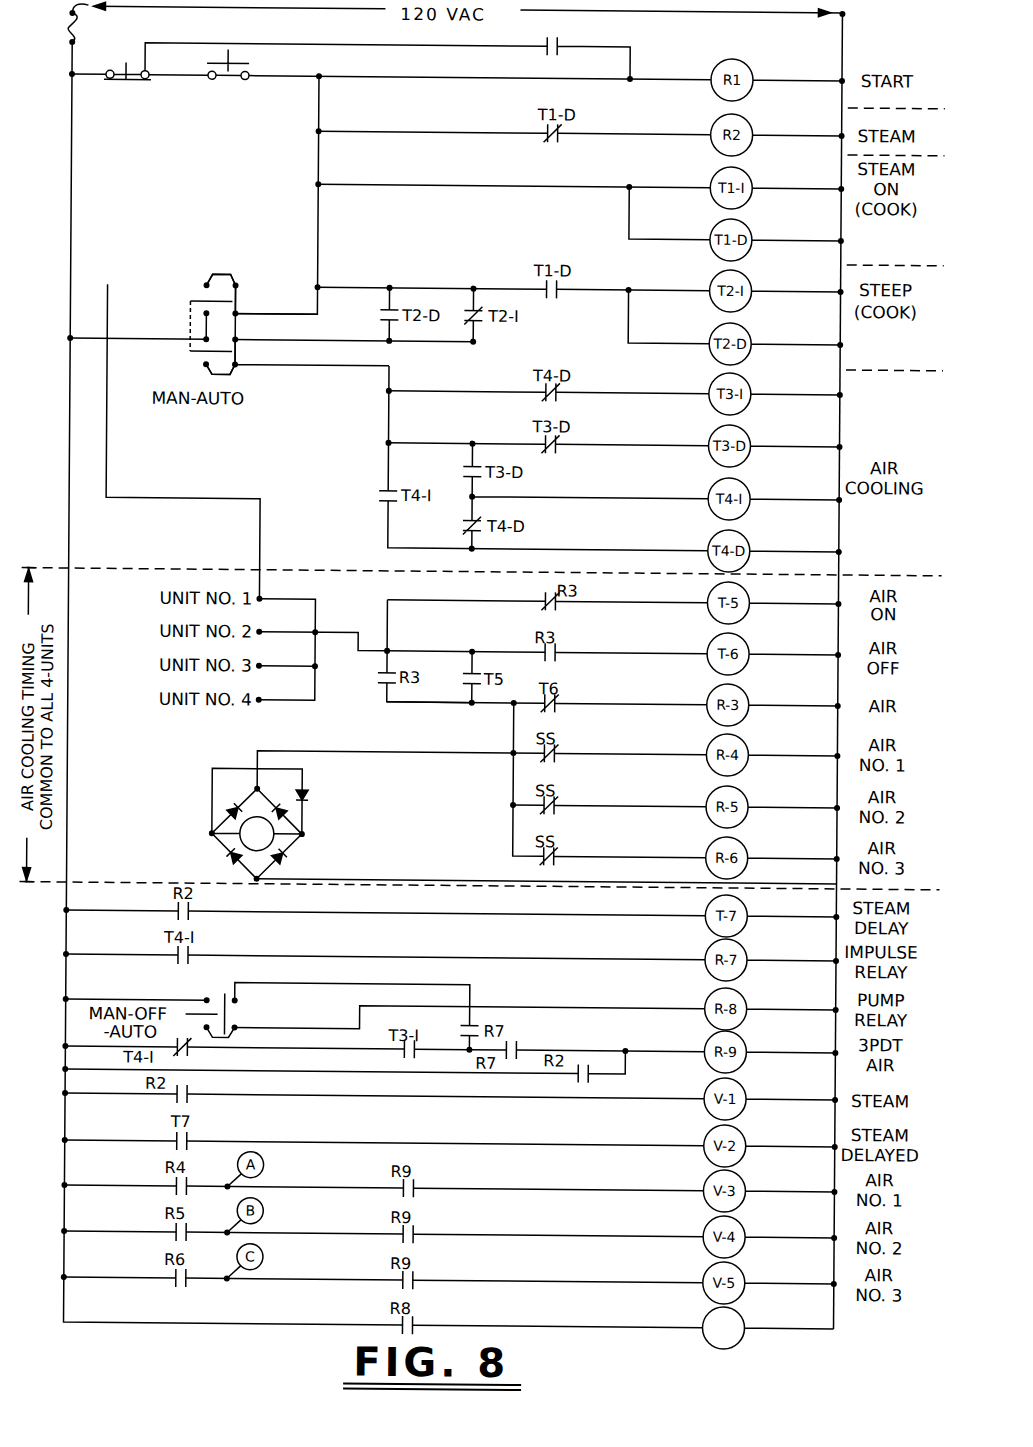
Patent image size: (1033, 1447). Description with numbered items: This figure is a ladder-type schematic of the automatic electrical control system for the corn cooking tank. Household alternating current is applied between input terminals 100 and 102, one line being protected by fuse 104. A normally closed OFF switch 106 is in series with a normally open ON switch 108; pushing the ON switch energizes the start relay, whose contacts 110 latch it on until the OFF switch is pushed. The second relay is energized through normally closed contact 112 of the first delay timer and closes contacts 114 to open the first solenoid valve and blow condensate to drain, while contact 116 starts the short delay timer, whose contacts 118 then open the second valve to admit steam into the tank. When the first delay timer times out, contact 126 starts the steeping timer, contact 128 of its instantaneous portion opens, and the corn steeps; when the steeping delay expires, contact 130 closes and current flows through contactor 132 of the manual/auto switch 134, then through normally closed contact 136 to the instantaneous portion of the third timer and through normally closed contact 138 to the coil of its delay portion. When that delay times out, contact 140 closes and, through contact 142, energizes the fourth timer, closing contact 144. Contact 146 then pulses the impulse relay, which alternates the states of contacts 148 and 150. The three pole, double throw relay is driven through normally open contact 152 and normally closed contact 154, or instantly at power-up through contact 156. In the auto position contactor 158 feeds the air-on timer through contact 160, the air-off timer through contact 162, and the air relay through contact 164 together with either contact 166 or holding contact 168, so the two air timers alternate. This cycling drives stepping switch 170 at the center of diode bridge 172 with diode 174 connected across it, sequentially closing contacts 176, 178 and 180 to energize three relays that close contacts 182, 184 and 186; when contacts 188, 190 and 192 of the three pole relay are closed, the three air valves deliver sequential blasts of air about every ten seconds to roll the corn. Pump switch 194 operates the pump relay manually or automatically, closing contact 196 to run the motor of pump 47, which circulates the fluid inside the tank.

The input terminal 100 is at (58, 18).
The input terminal 102 is at (847, 9).
The fuse 104 is at (86, 25).
The OFF switch 106 is at (127, 82).
The ON switch 108 is at (228, 76).
The R1 contacts 110 is at (559, 46).
The contact of delayed timer T1-D 112 is at (560, 135).
The R2 contacts 114 is at (195, 1087).
The contact of relay R2 116 is at (195, 915).
The contacts of delay timer T7 118 is at (184, 1138).
The contact of timer T1-D 126 is at (558, 290).
The contact of timer T2-I 128 is at (479, 320).
The contact of timer T2-D 130 is at (381, 312).
The contactor of manual/auto switch 132 is at (238, 347).
The manual/auto switch 134 is at (221, 268).
The contact of timer T4-D 136 is at (558, 393).
The contact of timer T3-D 138 is at (558, 445).
The contact of timer T3-D 140 is at (466, 466).
The contact of timer T4-D 142 is at (466, 522).
The contact of timer T4-I 144 is at (382, 490).
The contact of timer T4-I 146 is at (195, 959).
The contact of impulse relay R7 148 is at (469, 1024).
The contact of impulse relay R7 150 is at (522, 1041).
The contact of timer T3-I 152 is at (410, 1051).
The contact of timer T4-I 154 is at (198, 1052).
The contact of relay R2 156 is at (596, 1075).
The contactor of manual/auto switch 158 is at (238, 298).
The contact of relay R3 160 is at (547, 600).
The contact of relay R3 162 is at (560, 655).
The contact of timer T6 164 is at (560, 706).
The contact of timer T5 166 is at (466, 676).
The contact of relay R3 168 is at (383, 677).
The stepping switch 170 is at (230, 838).
The diode bridge 172 is at (299, 845).
The diode 174 is at (309, 793).
The stepping switch contact 176 is at (560, 756).
The stepping switch contact 178 is at (560, 808).
The stepping switch contact 180 is at (560, 859).
The R4 contact 182 is at (184, 1183).
The R5 contact 184 is at (184, 1229).
The R6 contact 186 is at (184, 1281).
The contact of relay R9 188 is at (421, 1181).
The contact of relay R9 190 is at (421, 1227).
The contact of relay R9 192 is at (421, 1273).
The pump switch 194 is at (234, 1013).
The contact of relay R8 196 is at (421, 1318).
The pump 47 is at (745, 1338).